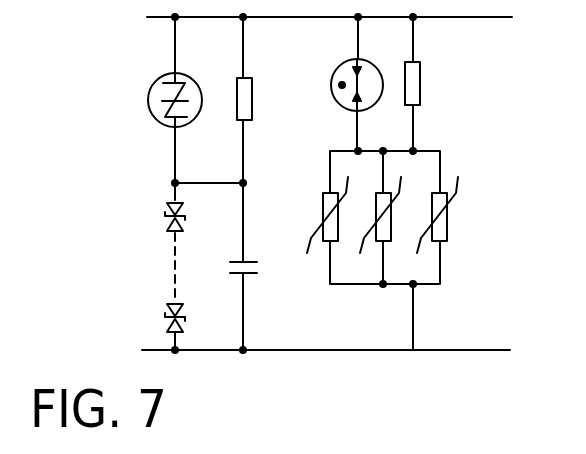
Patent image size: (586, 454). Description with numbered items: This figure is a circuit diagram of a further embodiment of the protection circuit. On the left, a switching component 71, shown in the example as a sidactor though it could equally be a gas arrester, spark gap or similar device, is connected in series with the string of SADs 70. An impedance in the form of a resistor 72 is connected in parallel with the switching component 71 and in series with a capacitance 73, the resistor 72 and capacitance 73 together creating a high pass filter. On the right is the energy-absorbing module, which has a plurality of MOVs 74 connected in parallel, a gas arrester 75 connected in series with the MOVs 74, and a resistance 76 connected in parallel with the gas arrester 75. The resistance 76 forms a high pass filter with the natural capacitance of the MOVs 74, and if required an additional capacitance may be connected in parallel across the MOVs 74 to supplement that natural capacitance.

The SADs 70 is at (157, 223).
The switching component 71 is at (137, 97).
The resistor 72 is at (250, 106).
The capacitance 73 is at (250, 278).
The MOVs 74 is at (383, 190).
The gas arrester 75 is at (338, 63).
The resistance 76 is at (413, 83).